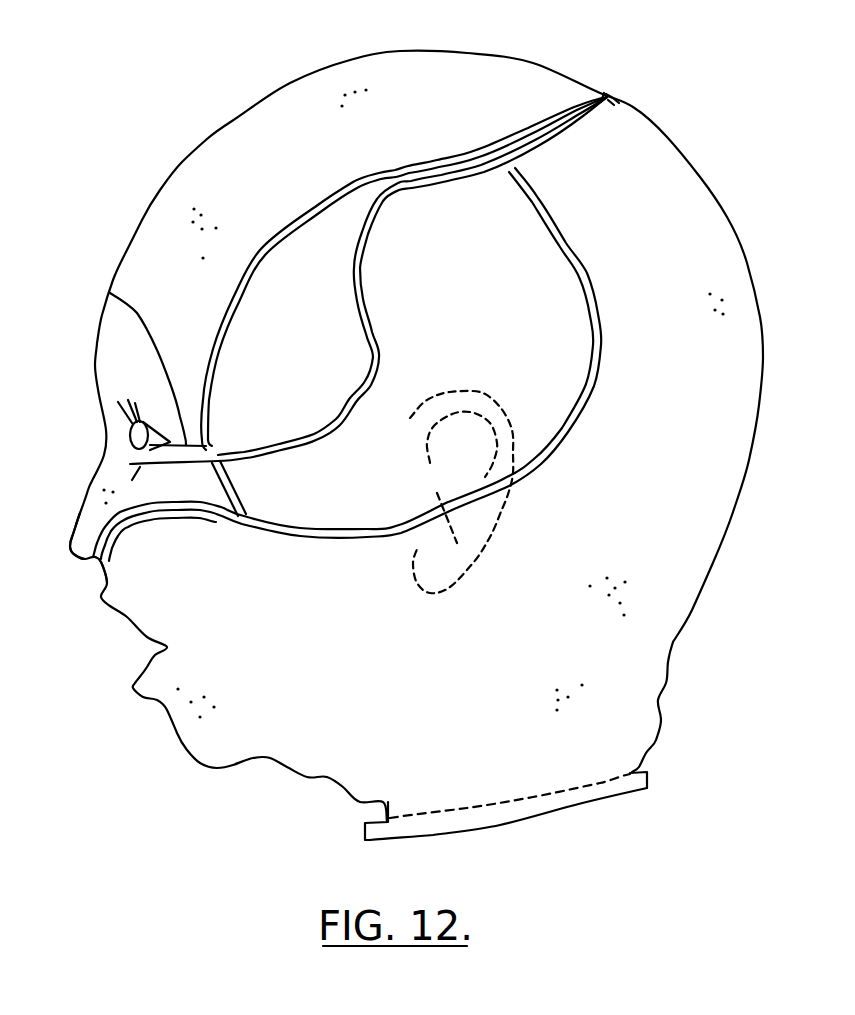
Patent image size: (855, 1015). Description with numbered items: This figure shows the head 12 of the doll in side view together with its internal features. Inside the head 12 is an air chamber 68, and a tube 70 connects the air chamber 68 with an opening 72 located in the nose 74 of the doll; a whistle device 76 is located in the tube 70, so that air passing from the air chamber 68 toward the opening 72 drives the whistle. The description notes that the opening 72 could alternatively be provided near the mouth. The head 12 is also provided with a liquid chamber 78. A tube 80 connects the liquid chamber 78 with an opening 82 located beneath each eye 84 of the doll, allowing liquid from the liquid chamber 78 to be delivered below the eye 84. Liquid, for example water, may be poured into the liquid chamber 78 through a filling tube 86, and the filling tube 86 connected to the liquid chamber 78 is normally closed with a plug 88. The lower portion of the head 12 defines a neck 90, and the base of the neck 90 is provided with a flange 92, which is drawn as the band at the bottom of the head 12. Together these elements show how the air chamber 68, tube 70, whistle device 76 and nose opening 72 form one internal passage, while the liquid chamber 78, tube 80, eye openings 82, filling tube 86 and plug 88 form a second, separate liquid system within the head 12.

The head 12 is at (407, 80).
The air chamber 68 is at (547, 263).
The tube 70 is at (147, 513).
The opening 72 is at (93, 563).
The nose 74 is at (80, 540).
The whistle device 76 is at (200, 513).
The liquid chamber 78 is at (290, 273).
The tube 80 is at (110, 293).
The opening 82 is at (130, 463).
The eye 84 is at (127, 425).
The filling tube 86 is at (543, 130).
The plug 88 is at (612, 97).
The neck 90 is at (602, 750).
The flange 92 is at (623, 780).